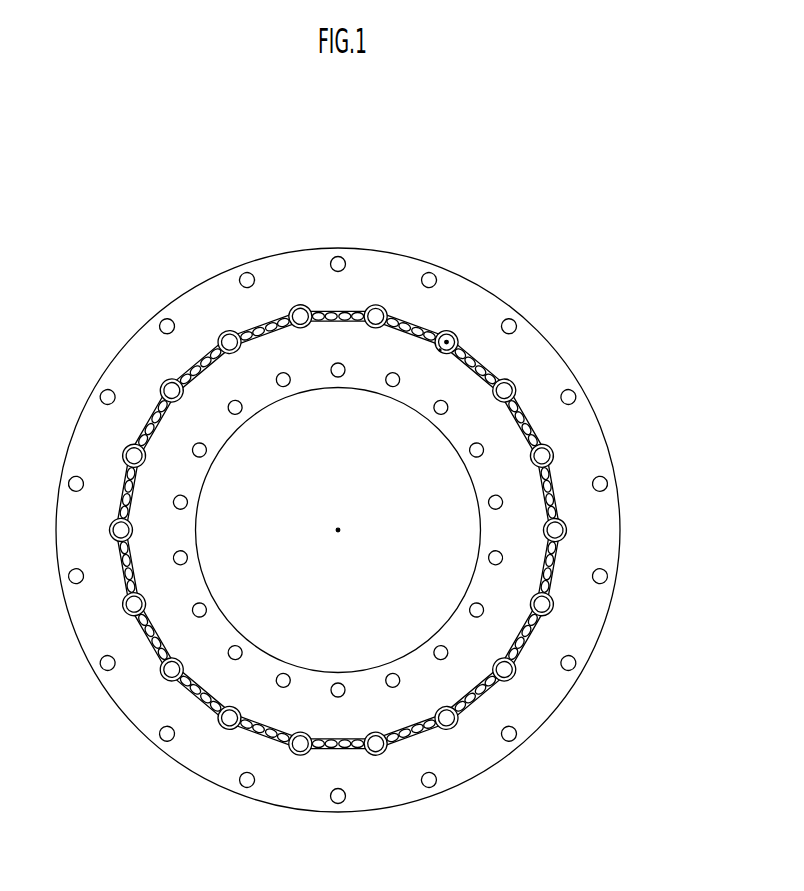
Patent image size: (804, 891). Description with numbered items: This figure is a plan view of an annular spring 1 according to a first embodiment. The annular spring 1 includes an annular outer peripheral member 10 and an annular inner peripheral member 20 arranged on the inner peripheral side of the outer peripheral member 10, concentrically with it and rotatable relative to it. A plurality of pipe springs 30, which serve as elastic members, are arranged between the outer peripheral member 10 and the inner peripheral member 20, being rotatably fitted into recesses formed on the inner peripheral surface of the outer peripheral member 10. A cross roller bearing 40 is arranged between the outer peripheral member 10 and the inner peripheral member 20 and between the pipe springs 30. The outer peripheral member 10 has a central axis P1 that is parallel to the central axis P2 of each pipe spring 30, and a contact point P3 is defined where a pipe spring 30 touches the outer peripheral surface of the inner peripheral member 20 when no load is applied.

The annular spring 1 is at (478, 220).
The outer peripheral member 10 is at (612, 449).
The inner peripheral member 20 is at (480, 532).
The pipe springs 30 is at (513, 382).
The cross roller bearing 40 is at (553, 507).
The central axis of the outer peripheral member P1 is at (336, 531).
The central axis of the pipe spring P2 is at (458, 340).
The contact point P3 is at (436, 352).